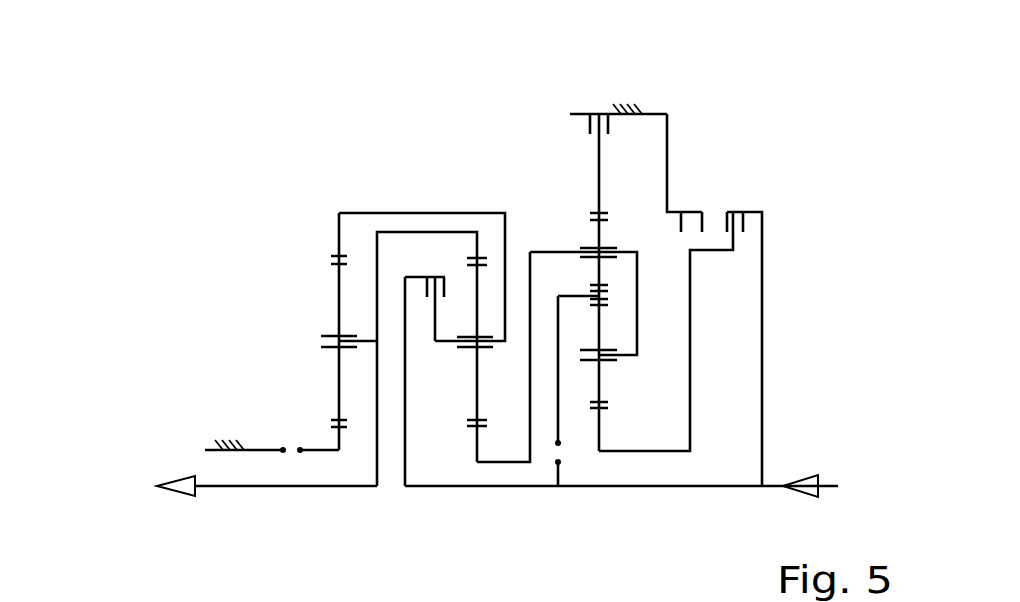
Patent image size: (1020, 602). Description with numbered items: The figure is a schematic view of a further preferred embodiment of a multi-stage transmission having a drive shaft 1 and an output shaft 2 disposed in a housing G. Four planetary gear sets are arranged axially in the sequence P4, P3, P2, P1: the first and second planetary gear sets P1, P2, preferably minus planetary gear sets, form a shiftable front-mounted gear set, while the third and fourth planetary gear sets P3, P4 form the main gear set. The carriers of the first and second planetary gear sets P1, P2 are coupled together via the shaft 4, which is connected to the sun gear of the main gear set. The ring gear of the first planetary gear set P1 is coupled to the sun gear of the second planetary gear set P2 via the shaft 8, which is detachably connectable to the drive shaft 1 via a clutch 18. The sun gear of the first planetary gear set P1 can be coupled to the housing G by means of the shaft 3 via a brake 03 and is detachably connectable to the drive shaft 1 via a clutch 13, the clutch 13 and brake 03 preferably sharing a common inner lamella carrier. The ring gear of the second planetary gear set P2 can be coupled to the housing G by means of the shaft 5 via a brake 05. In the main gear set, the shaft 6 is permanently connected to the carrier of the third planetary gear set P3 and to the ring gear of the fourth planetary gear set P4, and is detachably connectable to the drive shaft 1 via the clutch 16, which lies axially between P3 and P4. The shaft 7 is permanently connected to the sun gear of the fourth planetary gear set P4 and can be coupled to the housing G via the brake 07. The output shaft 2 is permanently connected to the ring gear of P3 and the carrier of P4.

The drive shaft 1 is at (507, 487).
The output shaft 2 is at (321, 340).
The shaft 3 is at (626, 455).
The shaft 4 is at (632, 258).
The shaft 5 is at (597, 162).
The shaft 6 is at (339, 213).
The shaft 7 is at (332, 452).
The shaft 8 is at (599, 330).
The clutch 13 is at (727, 212).
The clutch 16 is at (437, 283).
The clutch 18 is at (562, 452).
The housing G is at (637, 108).
The first planetary gear set P1 is at (624, 380).
The second planetary gear set P2 is at (584, 234).
The third planetary gear set P3 is at (468, 404).
The fourth planetary gear set P4 is at (322, 296).
The brake 03 is at (690, 215).
The brake 05 is at (598, 120).
The brake 07 is at (291, 452).